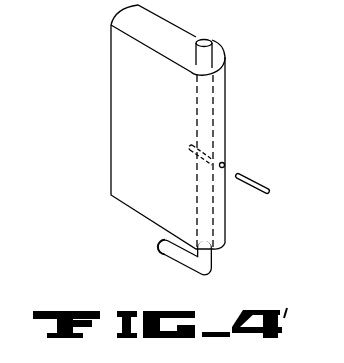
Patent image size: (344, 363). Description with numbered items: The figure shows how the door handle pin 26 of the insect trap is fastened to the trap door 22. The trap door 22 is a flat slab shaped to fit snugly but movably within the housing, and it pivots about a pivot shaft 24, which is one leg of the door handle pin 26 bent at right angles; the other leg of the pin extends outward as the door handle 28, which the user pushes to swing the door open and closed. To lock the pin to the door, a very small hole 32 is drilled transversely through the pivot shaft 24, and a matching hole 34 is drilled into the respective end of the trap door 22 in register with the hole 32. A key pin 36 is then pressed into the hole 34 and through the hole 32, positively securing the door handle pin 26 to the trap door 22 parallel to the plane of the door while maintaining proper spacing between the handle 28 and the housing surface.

The trap door 22 is at (118, 112).
The pivot shaft 24 is at (207, 41).
The door handle pin 26 is at (190, 269).
The door handle 28 is at (160, 246).
The hole 32 is at (213, 157).
The hole 34 is at (225, 165).
The key pin 36 is at (270, 188).